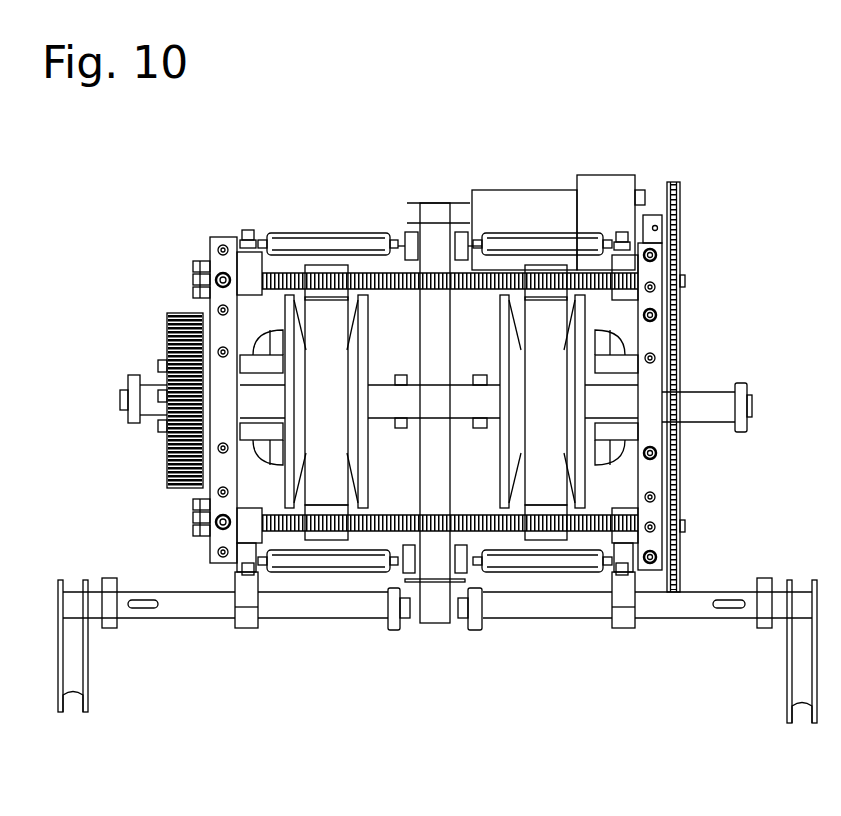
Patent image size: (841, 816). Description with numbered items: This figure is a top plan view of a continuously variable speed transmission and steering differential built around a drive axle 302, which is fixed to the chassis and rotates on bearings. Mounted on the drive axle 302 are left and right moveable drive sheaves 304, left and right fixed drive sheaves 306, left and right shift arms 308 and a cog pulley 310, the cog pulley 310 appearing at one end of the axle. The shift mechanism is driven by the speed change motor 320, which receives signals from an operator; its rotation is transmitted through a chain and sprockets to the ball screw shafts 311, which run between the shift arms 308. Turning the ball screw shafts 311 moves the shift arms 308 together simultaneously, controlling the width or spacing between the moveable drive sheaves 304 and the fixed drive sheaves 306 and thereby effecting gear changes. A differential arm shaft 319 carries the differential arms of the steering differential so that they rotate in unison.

The drive axle 302 is at (705, 415).
The moveable drive sheaves 304 is at (302, 340).
The fixed drive sheaves 306 is at (358, 330).
The shift arms 308 is at (215, 258).
The cog pulley 310 is at (167, 318).
The ball screw shafts 311 is at (292, 280).
The differential arm shaft 319 is at (433, 295).
The speed change motor 320 is at (553, 200).